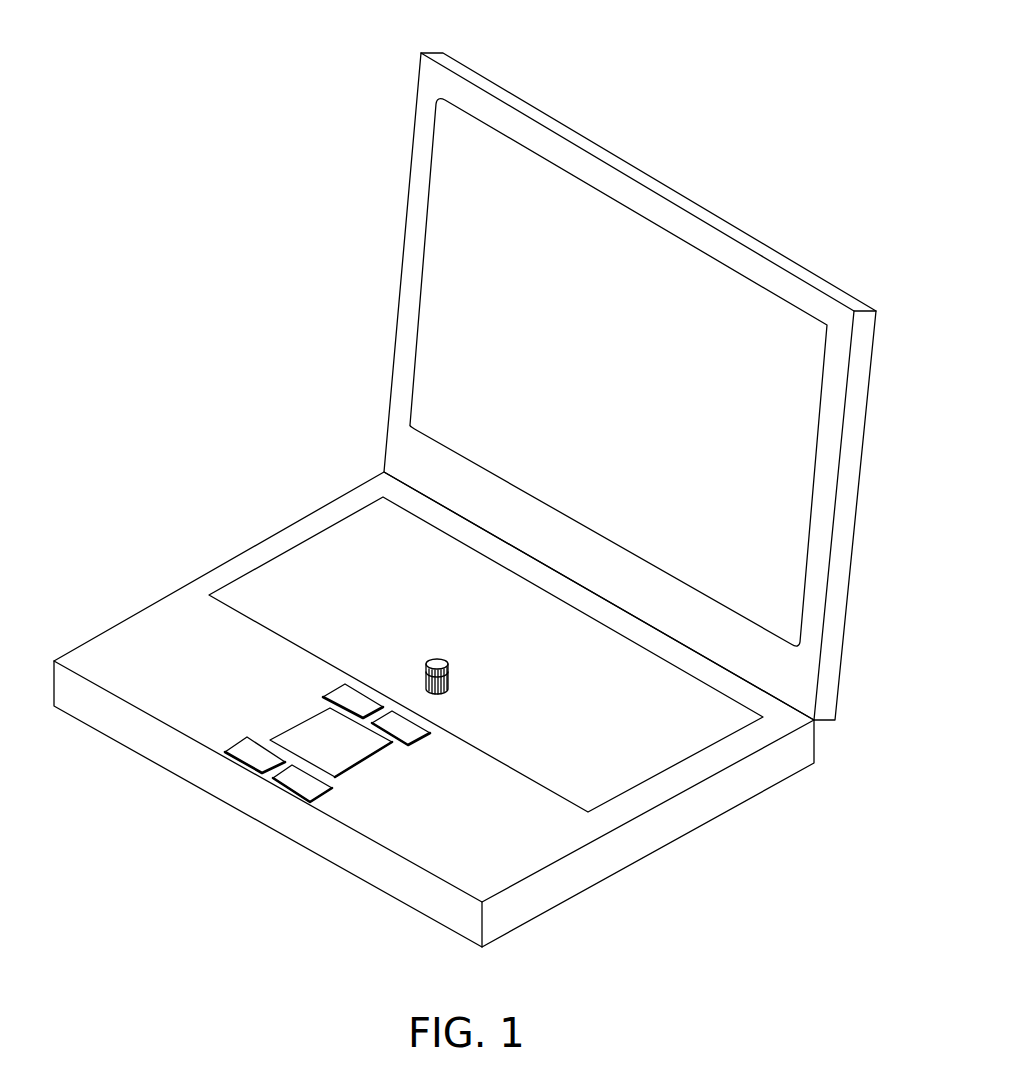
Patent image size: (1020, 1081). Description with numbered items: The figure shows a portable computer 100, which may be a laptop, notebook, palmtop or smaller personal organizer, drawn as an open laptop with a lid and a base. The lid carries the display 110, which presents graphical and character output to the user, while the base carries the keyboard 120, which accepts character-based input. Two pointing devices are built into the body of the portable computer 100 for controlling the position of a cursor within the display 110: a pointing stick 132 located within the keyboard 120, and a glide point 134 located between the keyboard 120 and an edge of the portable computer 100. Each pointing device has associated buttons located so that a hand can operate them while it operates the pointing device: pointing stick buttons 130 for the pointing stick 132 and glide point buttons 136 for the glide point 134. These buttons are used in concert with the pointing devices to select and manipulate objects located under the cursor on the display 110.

The portable computer 100 is at (493, 83).
The display 110 is at (593, 185).
The keyboard 120 is at (332, 526).
The pointing stick buttons 130 is at (400, 707).
The pointing stick 132 is at (438, 693).
The glide point 134 is at (352, 767).
The glide point buttons 136 is at (288, 792).